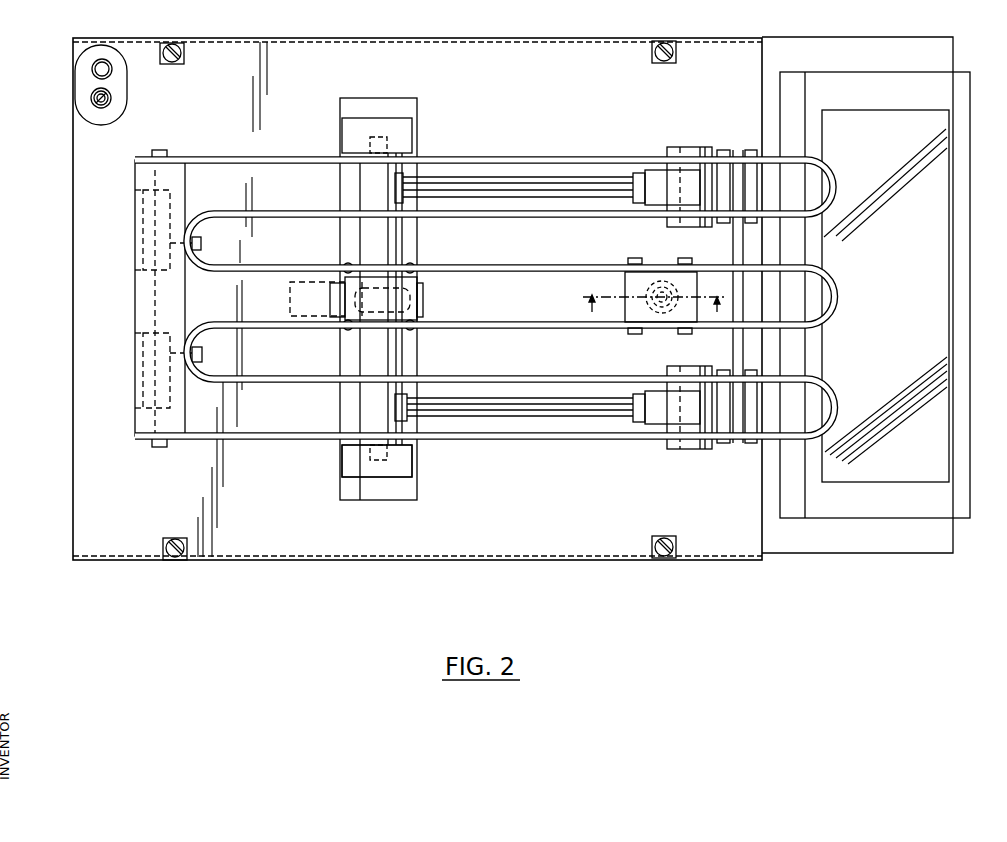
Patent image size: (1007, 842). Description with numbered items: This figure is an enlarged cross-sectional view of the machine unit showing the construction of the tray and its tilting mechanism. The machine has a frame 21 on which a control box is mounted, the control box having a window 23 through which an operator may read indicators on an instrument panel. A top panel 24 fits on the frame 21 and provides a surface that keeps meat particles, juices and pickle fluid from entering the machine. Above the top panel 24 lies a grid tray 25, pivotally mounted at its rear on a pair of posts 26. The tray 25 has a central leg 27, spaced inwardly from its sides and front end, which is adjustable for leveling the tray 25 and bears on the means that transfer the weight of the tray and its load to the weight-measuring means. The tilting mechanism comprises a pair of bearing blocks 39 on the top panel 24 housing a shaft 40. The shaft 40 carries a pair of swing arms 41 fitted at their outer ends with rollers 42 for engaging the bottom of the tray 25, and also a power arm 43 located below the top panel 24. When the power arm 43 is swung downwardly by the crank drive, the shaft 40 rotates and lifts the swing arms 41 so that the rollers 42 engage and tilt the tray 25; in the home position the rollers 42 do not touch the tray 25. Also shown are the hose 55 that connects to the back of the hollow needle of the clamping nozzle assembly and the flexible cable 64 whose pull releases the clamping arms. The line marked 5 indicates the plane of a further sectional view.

The frame 21 is at (865, 545).
The window 23 is at (897, 262).
The top panel 24 is at (417, 299).
The grid tray 25 is at (505, 436).
The posts 26 is at (135, 223).
The central leg 27 is at (628, 318).
The bearing blocks 39 is at (407, 135).
The shaft 40 is at (343, 462).
The swing arms 41 is at (502, 183).
The rollers 42 is at (678, 148).
The power arm 43 is at (290, 298).
The hose 55 is at (93, 63).
The flexible cable 64 is at (112, 99).
The section line 5- 5 is at (644, 292).